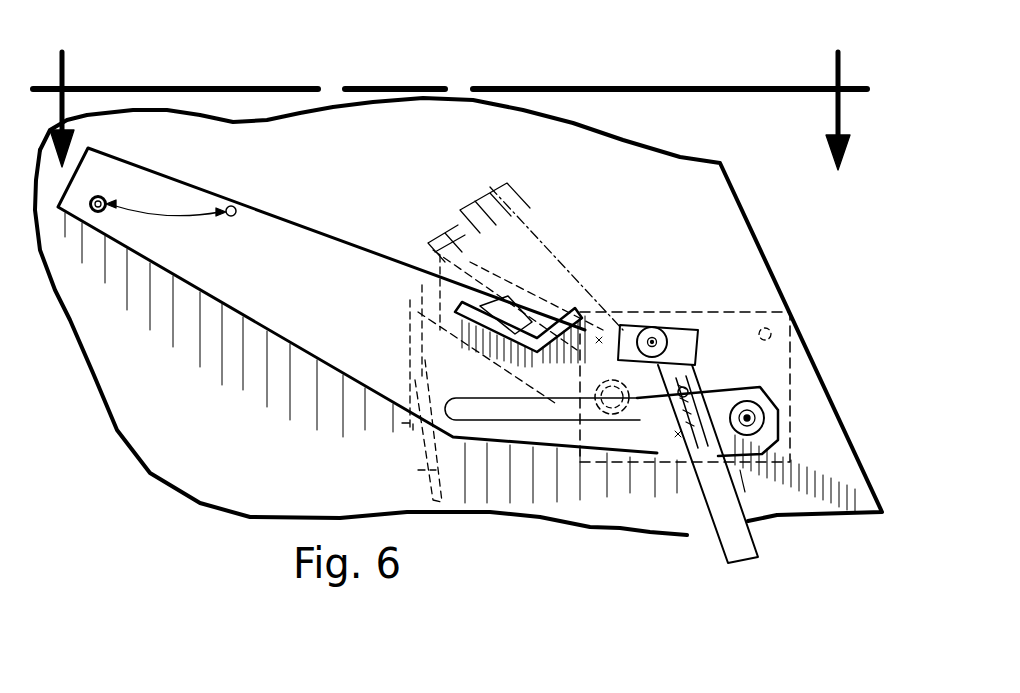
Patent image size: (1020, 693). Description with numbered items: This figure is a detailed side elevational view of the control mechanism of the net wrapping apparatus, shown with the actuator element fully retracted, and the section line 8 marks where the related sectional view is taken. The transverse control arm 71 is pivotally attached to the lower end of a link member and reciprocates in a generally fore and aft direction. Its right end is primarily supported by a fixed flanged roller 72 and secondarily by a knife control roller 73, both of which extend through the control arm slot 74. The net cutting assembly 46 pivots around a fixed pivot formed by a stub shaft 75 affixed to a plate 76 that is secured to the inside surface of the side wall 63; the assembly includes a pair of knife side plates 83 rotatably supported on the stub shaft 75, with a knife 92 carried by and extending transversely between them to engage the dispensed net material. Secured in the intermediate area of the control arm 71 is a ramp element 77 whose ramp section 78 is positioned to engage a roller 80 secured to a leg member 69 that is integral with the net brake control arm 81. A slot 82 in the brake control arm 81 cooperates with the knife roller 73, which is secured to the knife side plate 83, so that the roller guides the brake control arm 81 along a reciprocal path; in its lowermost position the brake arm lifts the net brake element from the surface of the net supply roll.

The section line 8- 8 is at (450, 99).
The side wall 63 is at (363, 172).
The control arm 71 is at (233, 273).
The control arm slot 74 is at (487, 419).
The net cutting assembly 46 is at (521, 202).
The ramp element 77 is at (507, 333).
The knife side plate 83 is at (437, 298).
The knife 92 is at (432, 497).
The plate 76 is at (745, 312).
The leg member 69 is at (682, 333).
The roller 80 is at (648, 333).
The knife control roller 73 is at (697, 390).
The fixed flanged roller 72 is at (765, 413).
The net brake control arm 81 is at (738, 562).
The stub shaft 75 is at (620, 395).
The ramp section 78 is at (540, 358).
The slot 82 is at (745, 490).